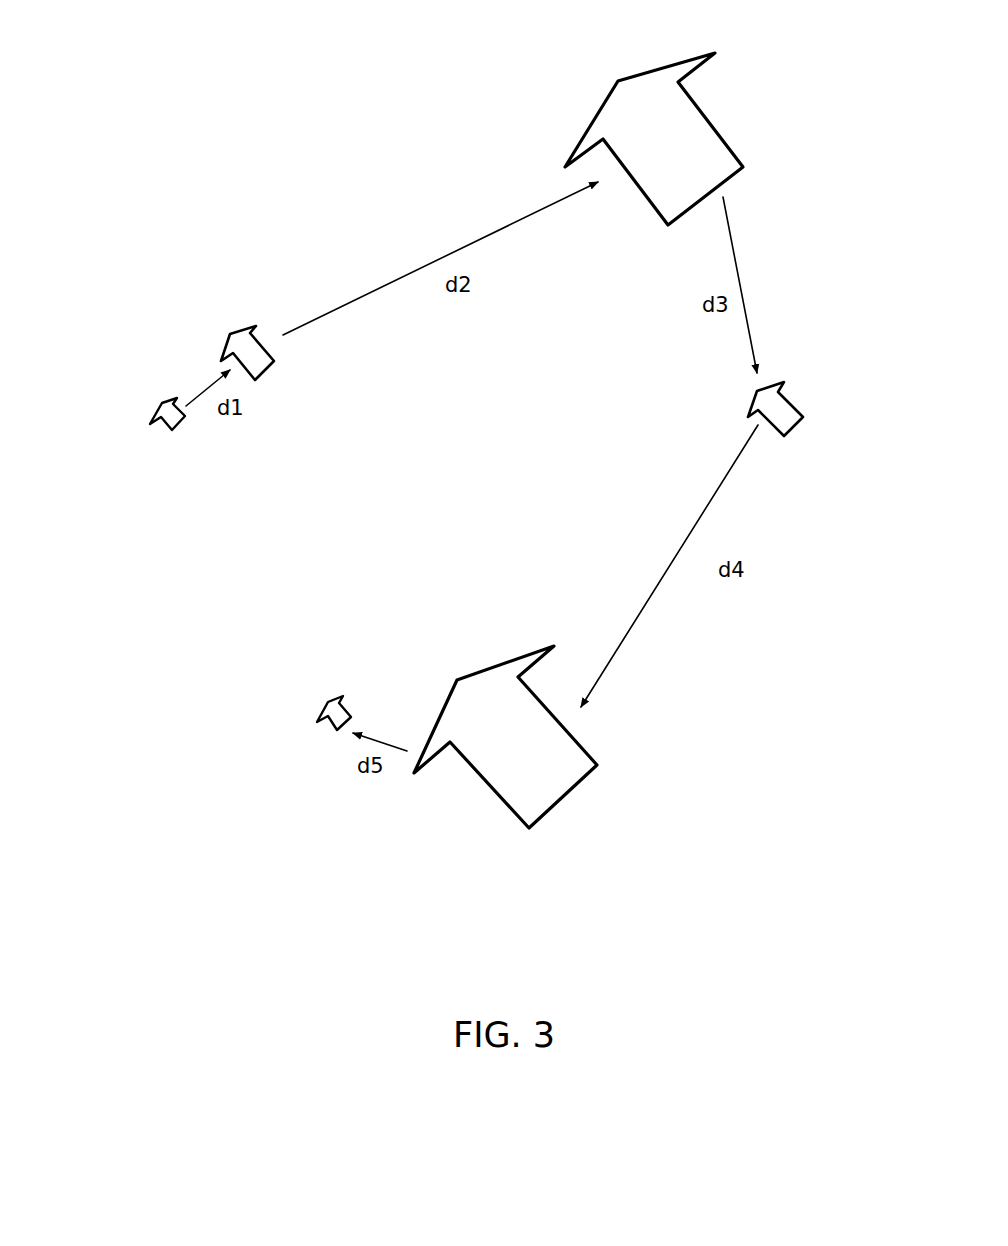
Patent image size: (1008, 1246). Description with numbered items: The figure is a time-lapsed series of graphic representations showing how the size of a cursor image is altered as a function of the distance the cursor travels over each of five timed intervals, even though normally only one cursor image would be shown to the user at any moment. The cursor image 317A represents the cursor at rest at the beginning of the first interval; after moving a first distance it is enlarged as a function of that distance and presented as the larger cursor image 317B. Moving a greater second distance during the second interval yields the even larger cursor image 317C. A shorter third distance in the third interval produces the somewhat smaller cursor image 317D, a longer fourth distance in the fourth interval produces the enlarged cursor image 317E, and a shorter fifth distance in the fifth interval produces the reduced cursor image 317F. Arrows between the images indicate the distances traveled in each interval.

The cursor image 317A is at (142, 423).
The cursor image 317B is at (249, 319).
The cursor image 317C is at (562, 127).
The cursor image 317D is at (808, 410).
The cursor image 317E is at (547, 643).
The cursor image 317F is at (315, 705).